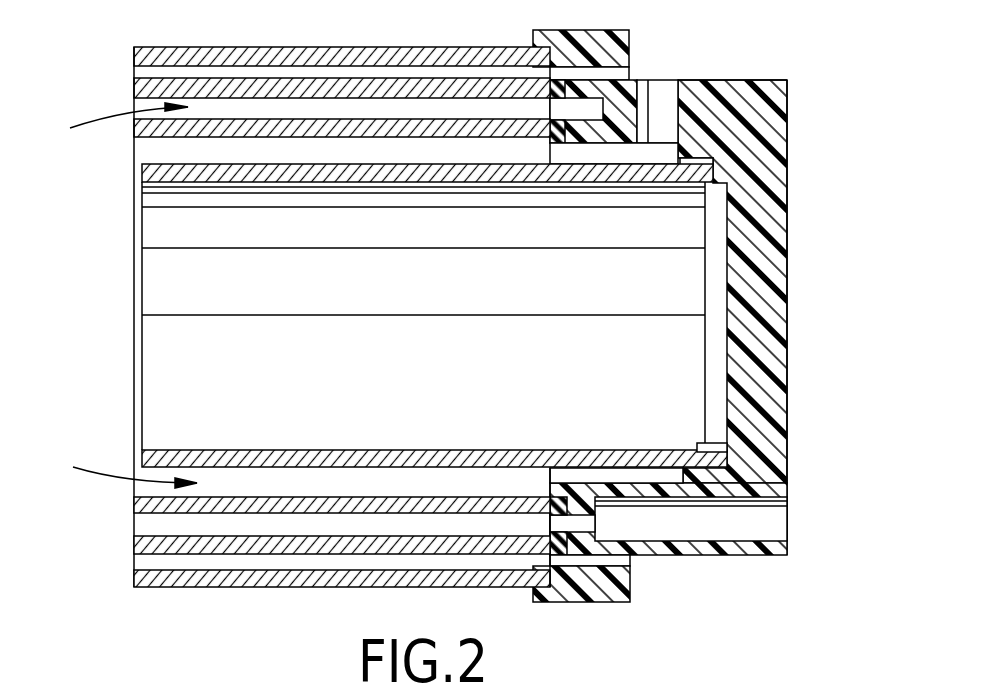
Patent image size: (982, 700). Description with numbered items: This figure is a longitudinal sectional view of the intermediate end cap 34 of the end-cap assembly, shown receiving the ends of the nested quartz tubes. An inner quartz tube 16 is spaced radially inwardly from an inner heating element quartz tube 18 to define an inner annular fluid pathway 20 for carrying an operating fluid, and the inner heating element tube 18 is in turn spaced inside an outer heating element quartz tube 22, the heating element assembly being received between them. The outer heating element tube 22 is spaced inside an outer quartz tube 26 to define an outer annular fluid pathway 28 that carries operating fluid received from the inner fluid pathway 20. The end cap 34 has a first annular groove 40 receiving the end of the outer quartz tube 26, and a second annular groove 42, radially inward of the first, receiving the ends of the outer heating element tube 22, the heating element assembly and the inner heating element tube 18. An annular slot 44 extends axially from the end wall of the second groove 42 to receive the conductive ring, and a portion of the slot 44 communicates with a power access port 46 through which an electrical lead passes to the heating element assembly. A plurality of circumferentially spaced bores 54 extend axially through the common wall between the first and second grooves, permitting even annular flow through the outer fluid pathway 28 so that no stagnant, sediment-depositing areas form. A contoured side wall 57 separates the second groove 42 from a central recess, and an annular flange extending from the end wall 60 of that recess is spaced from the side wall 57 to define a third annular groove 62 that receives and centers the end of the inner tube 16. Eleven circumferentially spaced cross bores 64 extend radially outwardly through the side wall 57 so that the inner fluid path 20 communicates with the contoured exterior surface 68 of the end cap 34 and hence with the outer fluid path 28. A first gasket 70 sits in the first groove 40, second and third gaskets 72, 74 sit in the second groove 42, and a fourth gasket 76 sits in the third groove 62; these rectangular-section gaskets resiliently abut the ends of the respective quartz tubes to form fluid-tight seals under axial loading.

The inner quartz tube 16 is at (142, 452).
The inner heating element quartz tube 18 is at (142, 500).
The inner annular fluid pathway 20 is at (119, 295).
The outer heating element quartz tube 22 is at (137, 545).
The outer quartz tube 26 is at (137, 582).
The outer annular fluid pathway 28 is at (142, 75).
The intermediate end cap 34 is at (803, 418).
The first annular groove 40 is at (540, 572).
The second annular groove 42 is at (553, 530).
The annular slot 44 is at (593, 523).
The power access port 46 is at (775, 508).
The bores 54 is at (630, 573).
The contoured side wall 57 is at (551, 470).
The end wall 60 is at (782, 258).
The third annular groove 62 is at (683, 466).
The cross bores 64 is at (660, 88).
The contoured exterior surface 68 is at (737, 90).
The first gasket 70 is at (587, 30).
The second gasket 72 is at (551, 92).
The third gasket 74 is at (553, 127).
The fourth gasket 76 is at (727, 160).